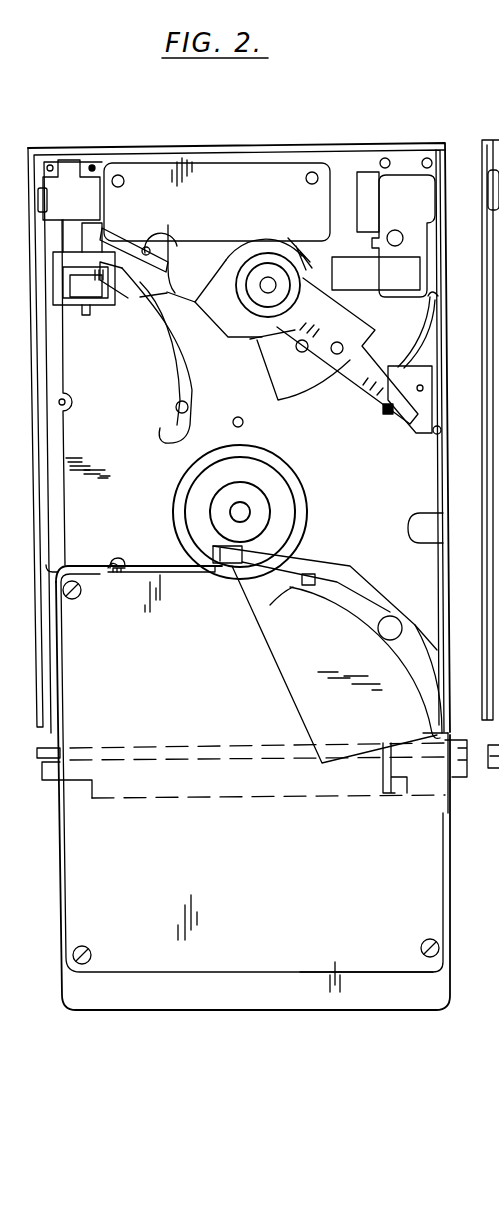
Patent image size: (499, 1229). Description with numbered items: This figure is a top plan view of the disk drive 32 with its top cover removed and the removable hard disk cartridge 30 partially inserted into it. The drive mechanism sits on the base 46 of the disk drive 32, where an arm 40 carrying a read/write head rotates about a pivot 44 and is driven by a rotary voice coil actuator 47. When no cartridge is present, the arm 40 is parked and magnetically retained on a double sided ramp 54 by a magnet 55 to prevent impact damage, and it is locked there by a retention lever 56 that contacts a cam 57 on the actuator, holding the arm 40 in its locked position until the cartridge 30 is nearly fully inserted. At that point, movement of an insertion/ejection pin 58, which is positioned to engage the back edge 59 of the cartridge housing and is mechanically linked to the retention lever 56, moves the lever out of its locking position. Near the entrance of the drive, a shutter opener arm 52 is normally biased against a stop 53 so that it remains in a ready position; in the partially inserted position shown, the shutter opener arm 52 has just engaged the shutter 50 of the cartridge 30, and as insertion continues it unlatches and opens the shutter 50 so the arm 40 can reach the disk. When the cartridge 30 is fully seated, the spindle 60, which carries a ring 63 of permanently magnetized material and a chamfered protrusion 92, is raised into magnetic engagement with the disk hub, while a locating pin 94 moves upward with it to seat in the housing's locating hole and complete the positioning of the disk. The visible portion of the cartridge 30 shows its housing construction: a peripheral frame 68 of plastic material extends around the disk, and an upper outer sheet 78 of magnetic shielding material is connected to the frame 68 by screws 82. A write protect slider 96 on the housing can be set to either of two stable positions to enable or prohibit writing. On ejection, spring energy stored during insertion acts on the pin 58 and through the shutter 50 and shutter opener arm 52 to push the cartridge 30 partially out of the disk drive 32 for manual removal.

The hard disk cartridge 30 is at (188, 1010).
The disk drive 32 is at (302, 146).
The arm 40 is at (362, 382).
The pivot 44 is at (268, 285).
The base 46 is at (150, 472).
The rotary voice coil actuator 47 is at (228, 258).
The shutter 50 is at (290, 640).
The shutter opener arm 52 is at (340, 566).
The stop 53 is at (270, 605).
The double sided ramp 54 is at (388, 414).
The magnet 55 is at (146, 248).
The retention lever 56 is at (330, 262).
The cam 57 is at (297, 258).
The insertion/ejection pin 58 is at (178, 406).
The back edge 59 is at (152, 562).
The spindle 60 is at (263, 480).
The ring 63 is at (282, 512).
The peripheral frame 68 is at (408, 995).
The upper outer sheet 78 is at (443, 797).
The screw 82 is at (438, 942).
The protrusion 92 is at (250, 510).
The locating pin 94 is at (248, 422).
The write protect slider 96 is at (108, 568).